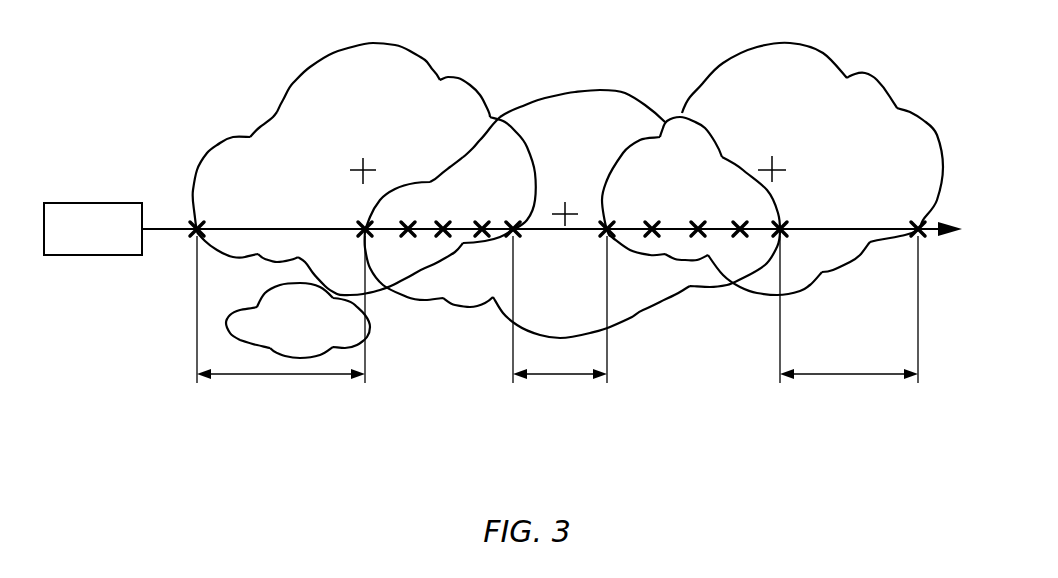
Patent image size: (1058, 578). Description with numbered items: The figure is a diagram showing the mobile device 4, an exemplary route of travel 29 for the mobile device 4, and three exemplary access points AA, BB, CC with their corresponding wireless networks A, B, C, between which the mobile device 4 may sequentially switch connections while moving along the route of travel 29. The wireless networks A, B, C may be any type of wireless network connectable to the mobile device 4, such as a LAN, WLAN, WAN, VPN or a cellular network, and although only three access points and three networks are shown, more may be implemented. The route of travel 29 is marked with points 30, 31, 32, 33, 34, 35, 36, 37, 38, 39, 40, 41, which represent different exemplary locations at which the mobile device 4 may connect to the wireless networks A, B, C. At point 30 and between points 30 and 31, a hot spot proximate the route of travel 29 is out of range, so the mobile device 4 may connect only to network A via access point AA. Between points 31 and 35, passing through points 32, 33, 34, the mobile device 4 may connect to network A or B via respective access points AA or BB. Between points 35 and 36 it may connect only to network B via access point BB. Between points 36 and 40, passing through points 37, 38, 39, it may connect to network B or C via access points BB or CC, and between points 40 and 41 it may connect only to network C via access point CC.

The mobile device 4 is at (125, 202).
The route of travel 29 is at (303, 228).
The point 30 is at (269, 315).
The point 31 is at (363, 315).
The point 32 is at (408, 218).
The point 33 is at (443, 218).
The point 34 is at (482, 218).
The point 35 is at (548, 315).
The point 36 is at (605, 315).
The point 37 is at (652, 218).
The point 38 is at (698, 218).
The point 39 is at (740, 218).
The point 40 is at (837, 315).
The point 41 is at (916, 315).
The wireless network A is at (287, 92).
The wireless network B is at (570, 93).
The wireless network C is at (781, 43).
The access point AA is at (363, 161).
The access point BB is at (565, 203).
The access point CC is at (781, 164).